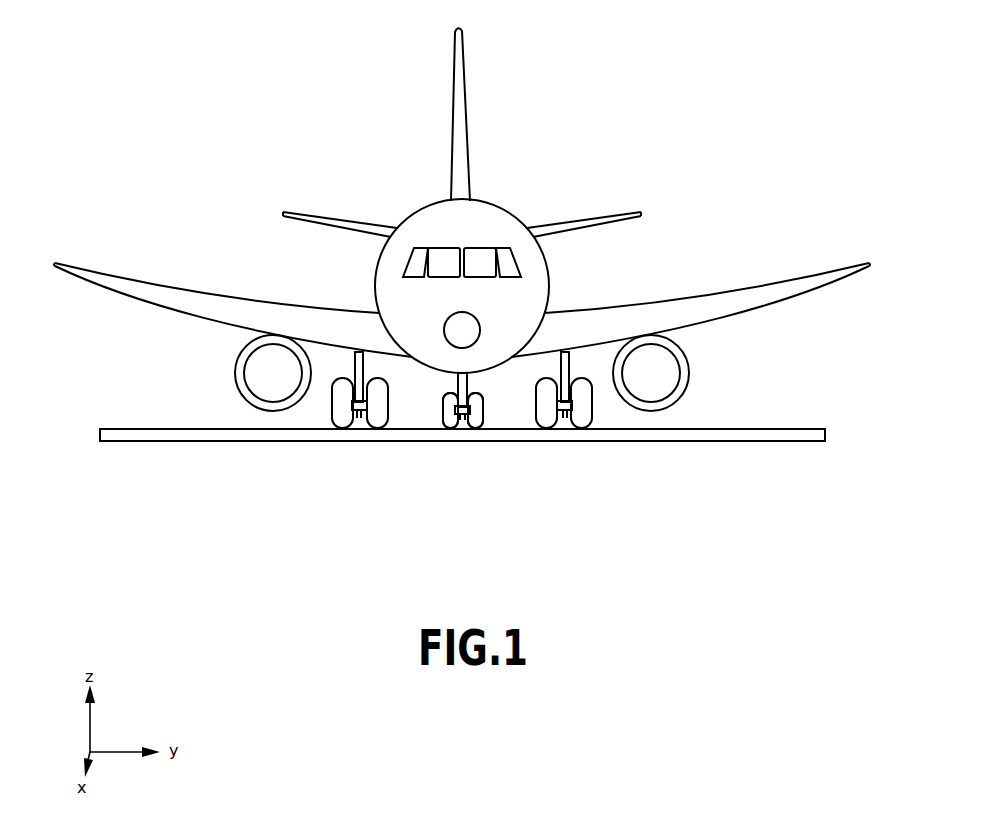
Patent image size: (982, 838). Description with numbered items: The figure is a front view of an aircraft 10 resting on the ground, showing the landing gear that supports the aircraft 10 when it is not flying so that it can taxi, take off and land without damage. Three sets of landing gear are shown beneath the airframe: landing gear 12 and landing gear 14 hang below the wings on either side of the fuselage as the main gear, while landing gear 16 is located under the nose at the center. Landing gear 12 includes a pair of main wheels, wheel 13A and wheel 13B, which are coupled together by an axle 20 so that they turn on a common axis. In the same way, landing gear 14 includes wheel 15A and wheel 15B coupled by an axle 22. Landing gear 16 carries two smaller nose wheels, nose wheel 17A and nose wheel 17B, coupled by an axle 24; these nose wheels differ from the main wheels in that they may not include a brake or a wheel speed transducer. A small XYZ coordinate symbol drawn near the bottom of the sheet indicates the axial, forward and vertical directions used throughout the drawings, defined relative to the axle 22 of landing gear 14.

The aircraft 10 is at (298, 108).
The landing gear 12 is at (624, 414).
The wheel 13A is at (600, 418).
The wheel 13B is at (502, 385).
The landing gear 14 is at (300, 414).
The wheel 15A is at (330, 422).
The wheel 15B is at (393, 418).
The landing gear 16 is at (548, 380).
The nose wheel 17A is at (489, 422).
The nose wheel 17B is at (437, 420).
The axle 20 is at (563, 416).
The axle 22 is at (360, 414).
The axle 24 is at (463, 416).